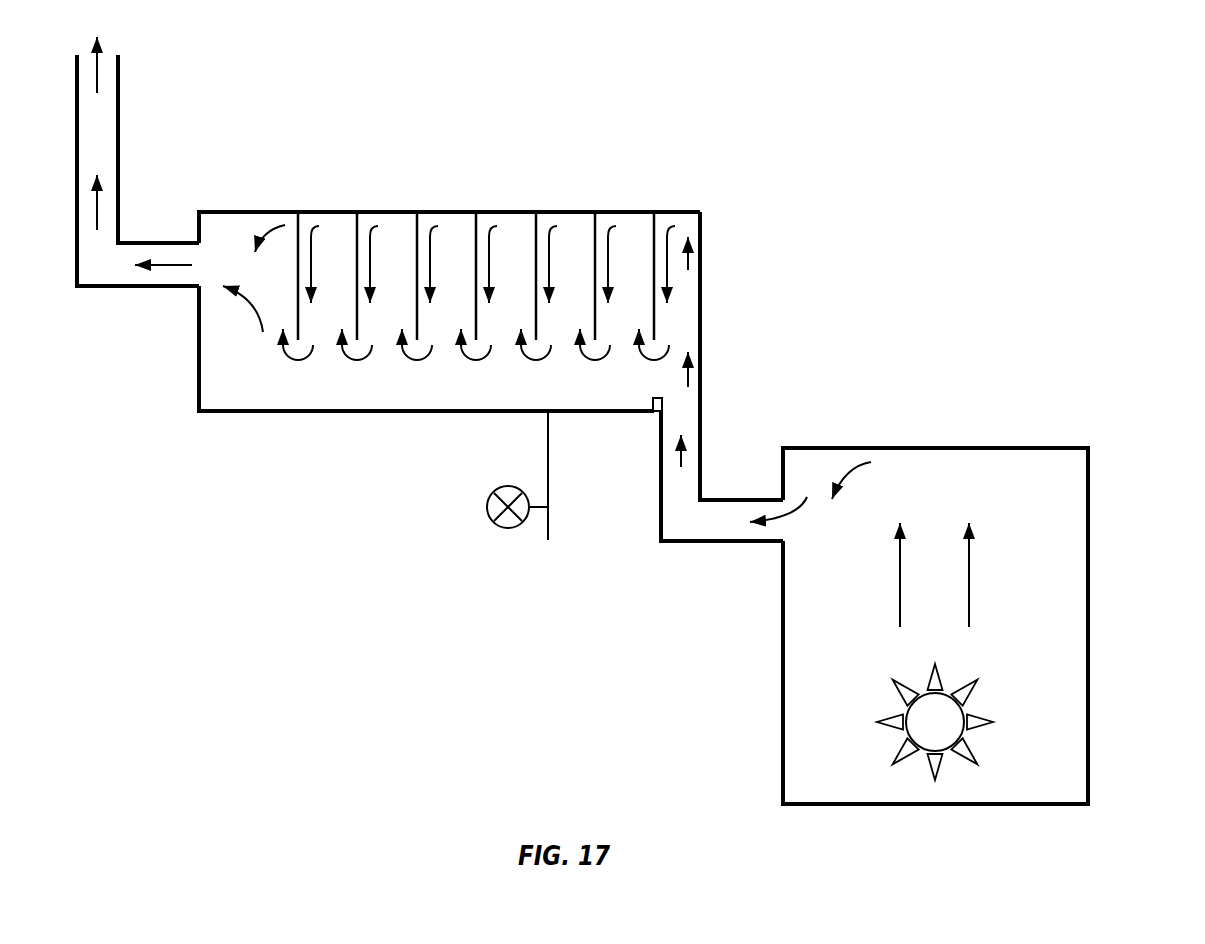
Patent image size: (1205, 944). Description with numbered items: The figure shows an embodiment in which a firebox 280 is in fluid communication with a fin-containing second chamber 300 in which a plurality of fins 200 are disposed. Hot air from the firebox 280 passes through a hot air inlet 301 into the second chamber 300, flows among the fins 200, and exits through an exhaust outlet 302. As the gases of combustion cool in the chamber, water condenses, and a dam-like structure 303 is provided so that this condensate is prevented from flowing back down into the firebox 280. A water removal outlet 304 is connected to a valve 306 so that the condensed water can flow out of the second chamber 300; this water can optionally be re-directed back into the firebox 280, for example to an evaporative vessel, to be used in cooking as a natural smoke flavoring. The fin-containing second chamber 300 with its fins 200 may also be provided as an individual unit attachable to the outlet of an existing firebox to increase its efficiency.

The fin-containing second chamber 300 is at (932, 122).
The exhaust outlet 302 is at (184, 232).
The fins 200 is at (408, 360).
The hot air inlet 301 is at (705, 392).
The dam-like structure 303 is at (652, 406).
The water removal outlet 304 is at (545, 417).
The valve 306 is at (480, 505).
The firebox 280 is at (1093, 437).